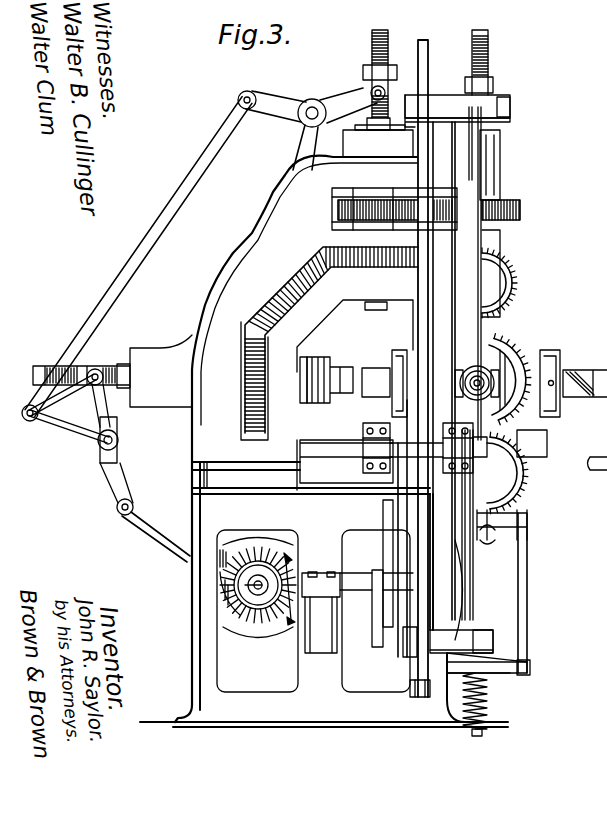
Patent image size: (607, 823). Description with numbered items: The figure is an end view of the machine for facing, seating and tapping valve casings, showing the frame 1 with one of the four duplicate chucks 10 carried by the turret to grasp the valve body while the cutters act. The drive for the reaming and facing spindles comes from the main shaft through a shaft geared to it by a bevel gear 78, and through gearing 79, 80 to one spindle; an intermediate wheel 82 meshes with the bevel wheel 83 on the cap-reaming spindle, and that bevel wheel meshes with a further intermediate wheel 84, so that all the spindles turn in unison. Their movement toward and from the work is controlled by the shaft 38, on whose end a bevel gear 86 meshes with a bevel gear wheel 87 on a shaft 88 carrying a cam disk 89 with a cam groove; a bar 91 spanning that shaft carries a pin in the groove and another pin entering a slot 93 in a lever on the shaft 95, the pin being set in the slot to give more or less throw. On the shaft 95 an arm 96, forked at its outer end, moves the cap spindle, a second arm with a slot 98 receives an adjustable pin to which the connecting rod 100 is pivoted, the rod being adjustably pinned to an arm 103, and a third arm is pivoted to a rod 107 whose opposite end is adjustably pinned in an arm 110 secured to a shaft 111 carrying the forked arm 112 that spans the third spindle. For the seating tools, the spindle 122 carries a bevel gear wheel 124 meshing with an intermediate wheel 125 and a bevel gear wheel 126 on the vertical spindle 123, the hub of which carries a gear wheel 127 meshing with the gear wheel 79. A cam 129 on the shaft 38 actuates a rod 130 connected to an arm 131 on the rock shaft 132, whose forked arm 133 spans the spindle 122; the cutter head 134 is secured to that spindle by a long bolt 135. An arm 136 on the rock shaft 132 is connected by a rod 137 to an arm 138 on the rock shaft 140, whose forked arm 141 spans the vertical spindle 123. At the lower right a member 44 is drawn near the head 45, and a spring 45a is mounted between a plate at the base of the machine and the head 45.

The frame 1 is at (319, 426).
The chuck 10 is at (484, 410).
The shaft 38 is at (228, 583).
The rod 44 is at (527, 610).
The head 45 is at (510, 668).
The spring 45a is at (487, 706).
The bevel gear 78 is at (443, 95).
The gear wheel 79 is at (446, 205).
The gearing 80 is at (521, 212).
The intermediate wheel 82 is at (530, 289).
The bevel wheel 83 is at (514, 348).
The intermediate wheel 84 is at (528, 472).
The bevel gear 86 is at (230, 600).
The bevel gear wheel 87 is at (292, 568).
The shaft 88 is at (352, 573).
The cam disk 89 is at (372, 630).
The bar 91 is at (383, 527).
The slot 93 is at (407, 546).
The shaft 95 is at (363, 452).
The arm 96 is at (457, 426).
The slot 98 is at (459, 383).
The connecting rod 100 is at (428, 283).
The arm 103 is at (426, 40).
The rod 107 is at (428, 550).
The arm 110 is at (415, 696).
The shaft 111 is at (403, 645).
The forked arm 112 is at (493, 642).
The spindle 122 is at (301, 404).
The spindle 123 is at (378, 311).
The bevel gear wheel 124 is at (248, 336).
The intermediate wheel 125 is at (290, 278).
The bevel gear wheel 126 is at (355, 256).
The gear wheel 127 is at (335, 208).
The cam 129 is at (258, 560).
The rod 130 is at (158, 552).
The arm 131 is at (115, 488).
The rock shaft 132 is at (100, 450).
The forked arm 133 is at (95, 413).
The cutter head 134 is at (345, 393).
The long bolt 135 is at (388, 47).
The arm 136 is at (53, 422).
The rod 137 is at (157, 236).
The arm 138 is at (277, 95).
The rock shaft 140 is at (298, 124).
The forked arm 141 is at (337, 100).